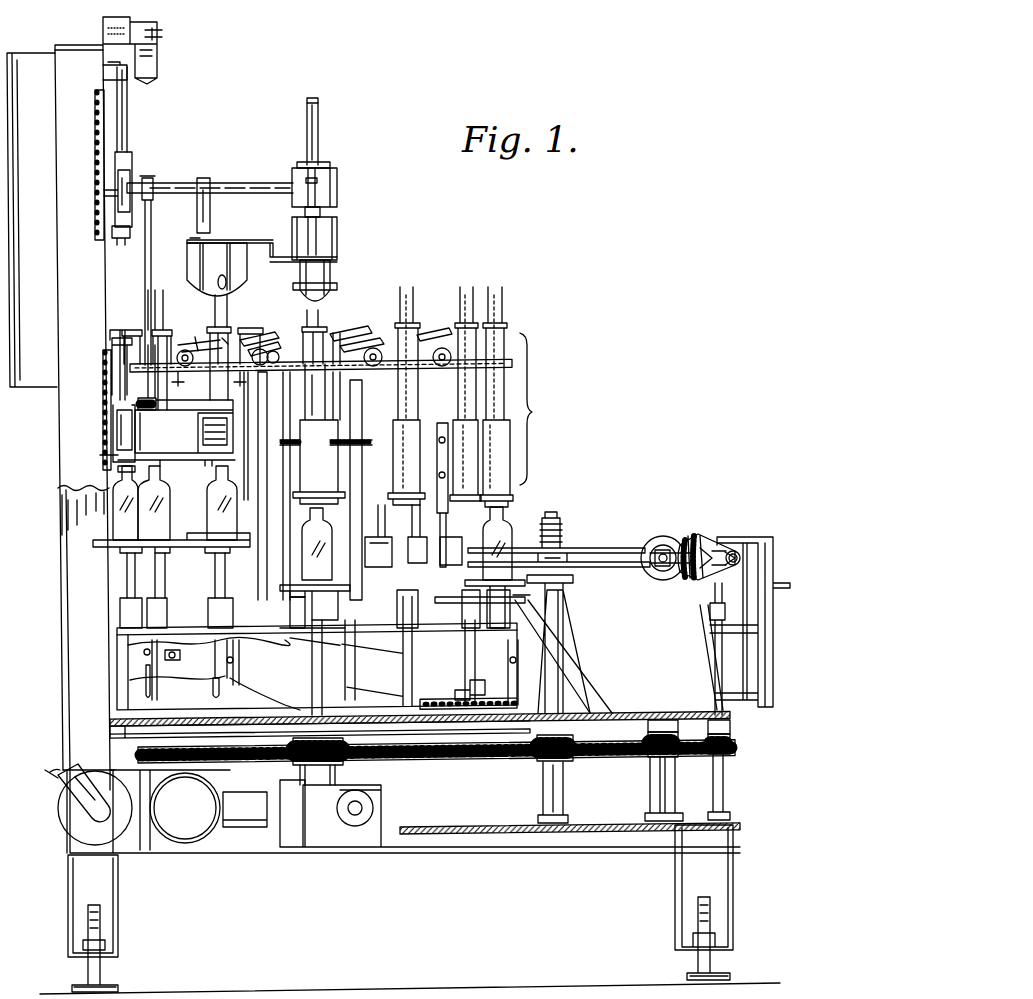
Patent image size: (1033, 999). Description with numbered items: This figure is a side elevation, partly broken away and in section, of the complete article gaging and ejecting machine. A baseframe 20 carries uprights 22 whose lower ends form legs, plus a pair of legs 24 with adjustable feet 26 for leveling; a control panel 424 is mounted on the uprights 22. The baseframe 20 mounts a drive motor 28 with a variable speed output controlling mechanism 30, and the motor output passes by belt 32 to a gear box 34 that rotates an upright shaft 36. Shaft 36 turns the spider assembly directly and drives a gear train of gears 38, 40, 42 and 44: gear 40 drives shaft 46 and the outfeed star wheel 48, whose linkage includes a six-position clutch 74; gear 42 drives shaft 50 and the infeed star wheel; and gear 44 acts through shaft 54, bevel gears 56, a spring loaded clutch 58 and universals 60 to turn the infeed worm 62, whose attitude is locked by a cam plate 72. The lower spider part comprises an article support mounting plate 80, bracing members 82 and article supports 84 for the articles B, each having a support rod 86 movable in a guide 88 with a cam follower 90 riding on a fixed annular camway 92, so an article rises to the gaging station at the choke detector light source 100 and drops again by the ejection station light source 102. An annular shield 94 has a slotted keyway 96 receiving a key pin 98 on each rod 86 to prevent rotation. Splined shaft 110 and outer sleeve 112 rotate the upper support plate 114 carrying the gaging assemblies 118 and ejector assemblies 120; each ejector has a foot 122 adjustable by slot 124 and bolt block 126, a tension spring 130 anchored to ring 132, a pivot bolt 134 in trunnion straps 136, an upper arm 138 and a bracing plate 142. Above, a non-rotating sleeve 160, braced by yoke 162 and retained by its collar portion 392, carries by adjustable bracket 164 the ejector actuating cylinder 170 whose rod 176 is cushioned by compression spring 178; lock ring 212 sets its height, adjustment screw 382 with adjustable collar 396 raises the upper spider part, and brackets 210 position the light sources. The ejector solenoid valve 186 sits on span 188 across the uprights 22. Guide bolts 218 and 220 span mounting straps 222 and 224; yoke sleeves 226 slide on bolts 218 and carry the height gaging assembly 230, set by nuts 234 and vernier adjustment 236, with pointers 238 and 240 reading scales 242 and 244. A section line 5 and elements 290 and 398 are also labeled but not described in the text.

The section line 5 is at (211, 374).
The baseframe 20 is at (600, 719).
The uprights 22 is at (63, 646).
The legs 24 is at (685, 905).
The adjustable feet 26 is at (120, 983).
The drive motor 28 is at (192, 842).
The variable speed output controlling mechanism 30 is at (75, 797).
The belt 32 is at (246, 790).
The gear box 34 is at (302, 840).
The upright shaft 36 is at (345, 769).
The gear 38 is at (405, 763).
The gear 40 is at (540, 762).
The gear 42 is at (650, 759).
The gear 44 is at (732, 747).
The shaft 46 is at (570, 781).
The outfeed star wheel 48 is at (590, 548).
The shaft 50 is at (676, 777).
The shaft 54 is at (712, 592).
The bevel gears 56 is at (728, 538).
The spring loaded clutch 58 is at (696, 531).
The universals 60 is at (652, 575).
The infeed worm 62 is at (660, 535).
The cam plate 72 is at (784, 581).
The clutch 74 is at (572, 582).
The article support mounting plate 80 is at (448, 626).
The bracing members 82 is at (382, 645).
The article supports 84 is at (190, 525).
The support rod 86 is at (165, 572).
The guide 88 is at (208, 604).
The cam follower 90 is at (182, 652).
The annular camway 92 is at (236, 673).
The annular shield 94 is at (132, 669).
The slotted keyway 96 is at (145, 682).
The key pin 98 is at (145, 649).
The choke detector light source 100 is at (205, 252).
The ejection station light source 102 is at (320, 273).
The splined shaft 110 is at (330, 615).
The outer sleeve 112 is at (342, 505).
The upper support plate 114 is at (298, 372).
The gaging assemblies 118 is at (475, 397).
The ejector assemblies 120 is at (272, 477).
The ejector foot 122 is at (366, 558).
The slot 124 is at (448, 507).
The bolt block 126 is at (398, 510).
The tension spring 130 is at (356, 442).
The spring anchoring ring 132 is at (288, 436).
The bolt 134 is at (187, 350).
The trunnion straps 136 is at (445, 345).
The upper arm 138 is at (244, 338).
The bracing plate 142 is at (368, 438).
The non-rotating sleeve 160 is at (326, 310).
The yoke 162 is at (220, 183).
The adjustable bracket 164 is at (338, 230).
The ejector actuating cylinder 170 is at (318, 243).
The cylinder rod 176 is at (318, 188).
The floating compression spring 178 is at (322, 210).
The ejector solenoid valve 186 is at (106, 22).
The span 188 is at (63, 44).
The adjustable mounting brackets 210 is at (212, 226).
The lock ring 212 is at (338, 288).
The upper guide bolts 218 is at (128, 109).
The lower guide bolt 220 is at (112, 363).
The mounting straps 222 is at (104, 68).
The mounting straps 224 is at (110, 328).
The sleeves 226 is at (133, 156).
The height gaging assembly 230 is at (186, 459).
The nuts 234 is at (150, 181).
The vernier threaded adjustment 236 is at (138, 402).
The pointer 238 is at (118, 188).
The pointer 240 is at (118, 428).
The scale means 242 is at (96, 106).
The scale means 244 is at (105, 453).
The control box 290 is at (184, 426).
The adjustment screw 382 is at (345, 135).
The lockable collar portion 392 is at (296, 170).
The adjustable collar 396 is at (332, 163).
The rod end 398 is at (320, 102).
The control panel 424 is at (34, 376).
The bottle B is at (206, 488).